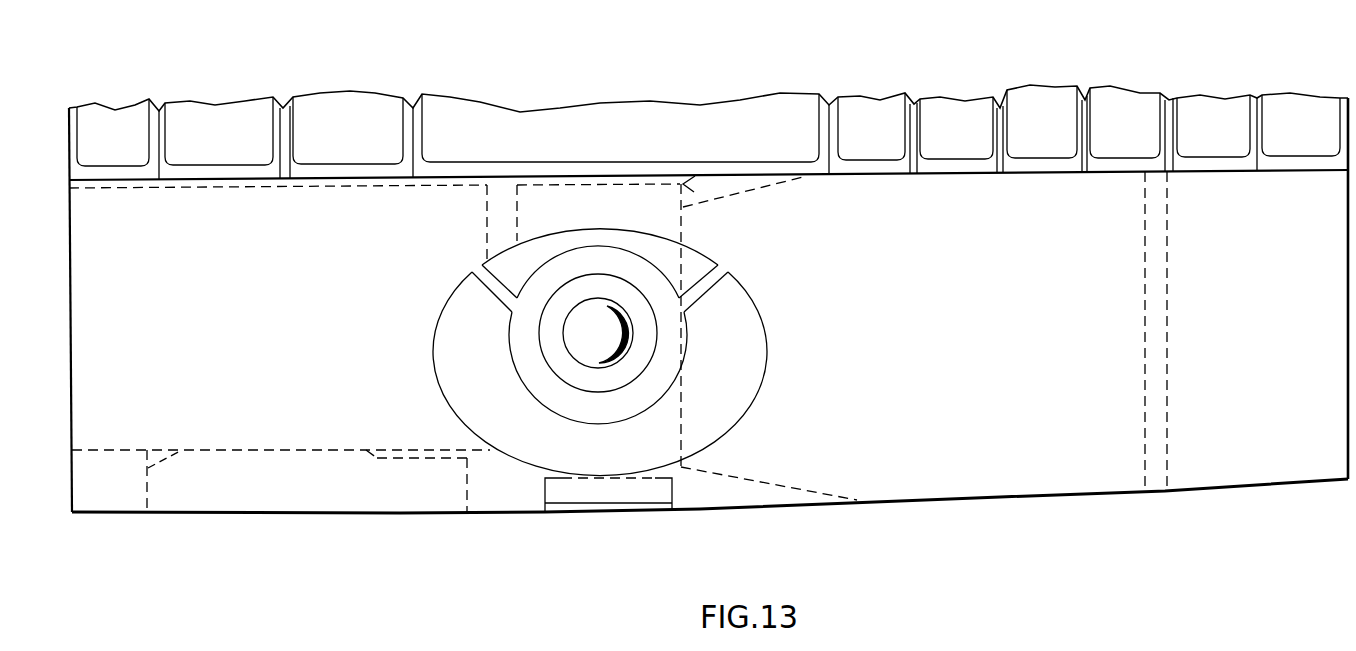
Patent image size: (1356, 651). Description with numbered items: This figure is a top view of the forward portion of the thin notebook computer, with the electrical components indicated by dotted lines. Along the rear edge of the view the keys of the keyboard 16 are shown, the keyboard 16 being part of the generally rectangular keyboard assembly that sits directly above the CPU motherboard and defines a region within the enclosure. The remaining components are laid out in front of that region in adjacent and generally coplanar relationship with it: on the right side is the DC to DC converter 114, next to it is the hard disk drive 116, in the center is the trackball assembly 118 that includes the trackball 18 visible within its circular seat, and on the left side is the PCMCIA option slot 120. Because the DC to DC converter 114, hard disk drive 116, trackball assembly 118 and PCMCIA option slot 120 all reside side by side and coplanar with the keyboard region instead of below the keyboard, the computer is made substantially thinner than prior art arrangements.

The keyboard 16 is at (1303, 115).
The trackball 18 is at (601, 330).
The DC to DC converter 114 is at (1263, 373).
The hard disk drive 116 is at (977, 373).
The trackball assembly 118 is at (645, 492).
The PCMCIA option slot 120 is at (312, 382).